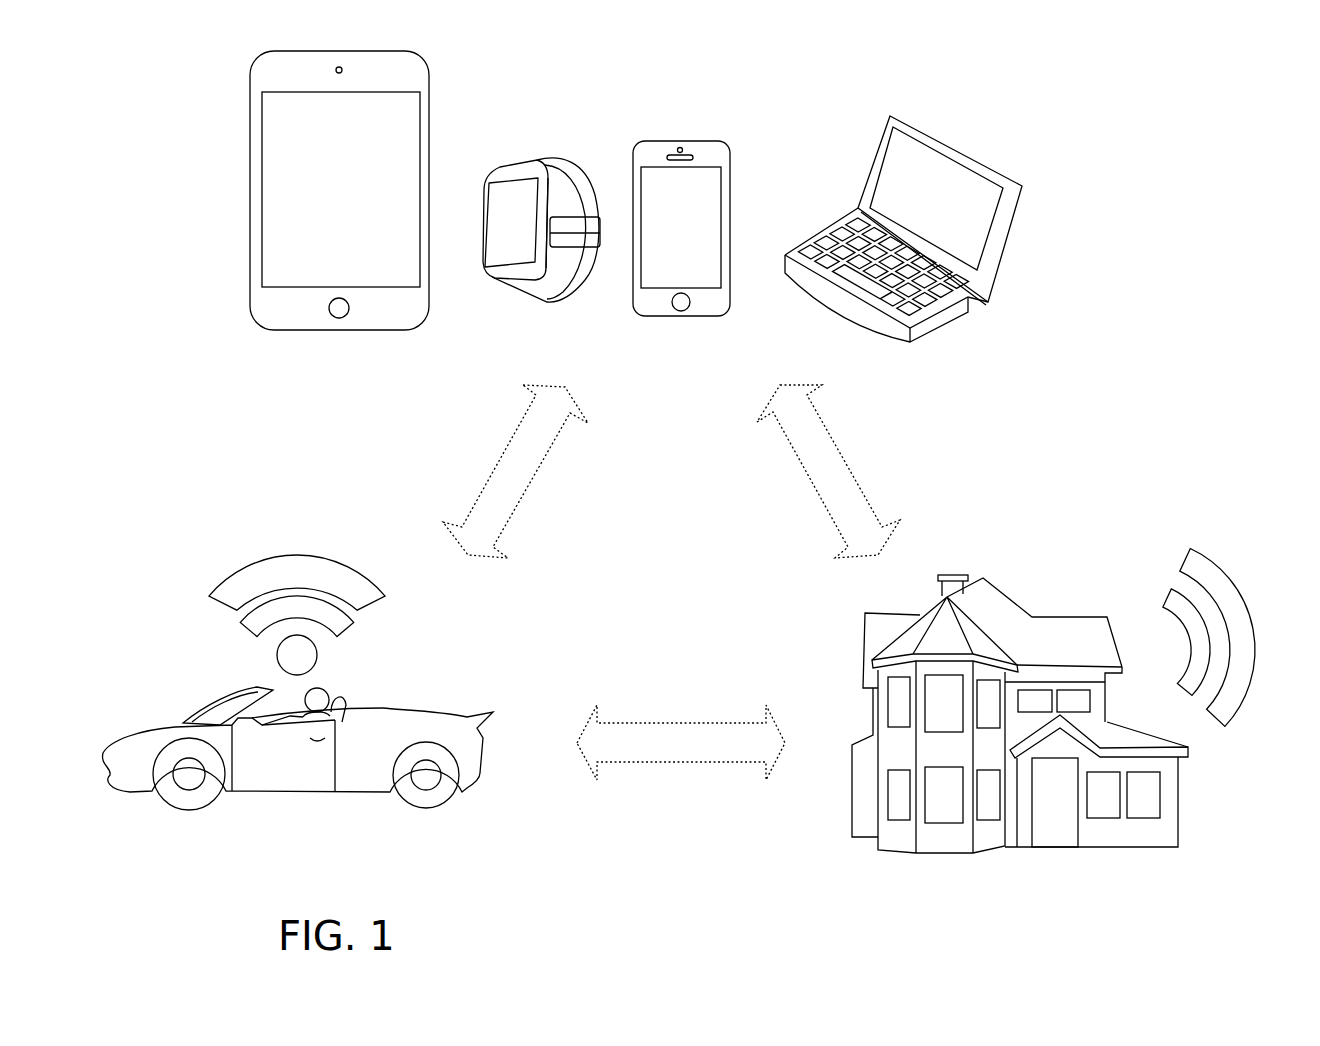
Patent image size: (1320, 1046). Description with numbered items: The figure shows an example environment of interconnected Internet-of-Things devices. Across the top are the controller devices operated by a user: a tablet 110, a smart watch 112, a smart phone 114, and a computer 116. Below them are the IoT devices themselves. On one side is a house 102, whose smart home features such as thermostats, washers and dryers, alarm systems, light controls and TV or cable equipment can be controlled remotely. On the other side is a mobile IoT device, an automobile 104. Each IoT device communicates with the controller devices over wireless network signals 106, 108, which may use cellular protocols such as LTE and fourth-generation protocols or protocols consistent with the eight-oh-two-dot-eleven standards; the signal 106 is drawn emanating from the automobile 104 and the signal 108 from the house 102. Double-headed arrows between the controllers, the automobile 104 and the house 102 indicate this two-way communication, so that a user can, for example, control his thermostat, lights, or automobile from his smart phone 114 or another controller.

The house 102 is at (1050, 617).
The vehicle 104 is at (493, 712).
The wireless network signal 106 is at (317, 555).
The wireless network signal 108 is at (1217, 563).
The tablet 110 is at (428, 122).
The smart watch 112 is at (543, 158).
The smart phone 114 is at (710, 142).
The computer 116 is at (1022, 198).